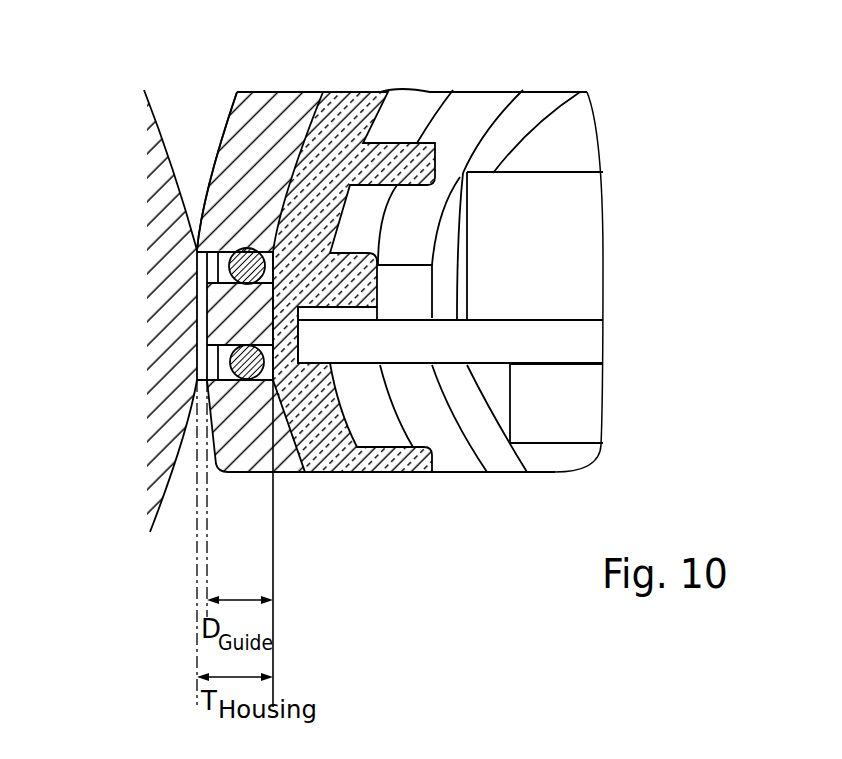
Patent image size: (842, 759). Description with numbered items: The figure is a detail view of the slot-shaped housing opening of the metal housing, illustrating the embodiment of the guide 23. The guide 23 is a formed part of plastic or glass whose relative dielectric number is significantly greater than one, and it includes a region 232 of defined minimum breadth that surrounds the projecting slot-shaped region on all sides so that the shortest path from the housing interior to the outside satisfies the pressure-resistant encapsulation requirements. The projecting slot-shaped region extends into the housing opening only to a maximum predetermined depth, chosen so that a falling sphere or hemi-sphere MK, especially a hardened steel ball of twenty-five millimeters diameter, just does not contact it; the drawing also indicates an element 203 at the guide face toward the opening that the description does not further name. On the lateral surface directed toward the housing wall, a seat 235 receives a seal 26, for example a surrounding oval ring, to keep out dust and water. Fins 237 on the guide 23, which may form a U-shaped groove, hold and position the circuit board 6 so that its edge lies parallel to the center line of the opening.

The sphere, or hemi-sphere MK is at (147, 240).
The guide 23 is at (387, 492).
The region having a defined minimum breadth 232 is at (331, 160).
The guide surface 203 is at (222, 228).
The fins 237 is at (313, 299).
The seat 235 is at (207, 259).
The seal 26 is at (220, 365).
The circuit board 6 is at (580, 345).